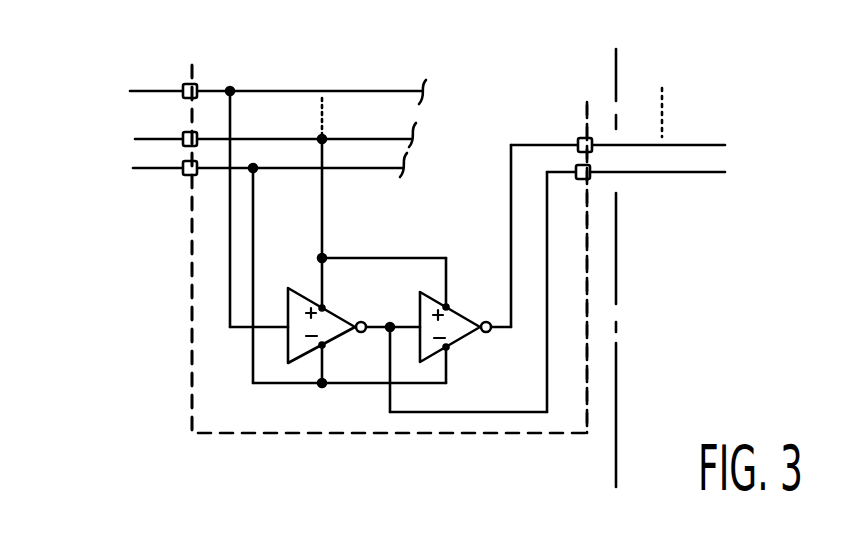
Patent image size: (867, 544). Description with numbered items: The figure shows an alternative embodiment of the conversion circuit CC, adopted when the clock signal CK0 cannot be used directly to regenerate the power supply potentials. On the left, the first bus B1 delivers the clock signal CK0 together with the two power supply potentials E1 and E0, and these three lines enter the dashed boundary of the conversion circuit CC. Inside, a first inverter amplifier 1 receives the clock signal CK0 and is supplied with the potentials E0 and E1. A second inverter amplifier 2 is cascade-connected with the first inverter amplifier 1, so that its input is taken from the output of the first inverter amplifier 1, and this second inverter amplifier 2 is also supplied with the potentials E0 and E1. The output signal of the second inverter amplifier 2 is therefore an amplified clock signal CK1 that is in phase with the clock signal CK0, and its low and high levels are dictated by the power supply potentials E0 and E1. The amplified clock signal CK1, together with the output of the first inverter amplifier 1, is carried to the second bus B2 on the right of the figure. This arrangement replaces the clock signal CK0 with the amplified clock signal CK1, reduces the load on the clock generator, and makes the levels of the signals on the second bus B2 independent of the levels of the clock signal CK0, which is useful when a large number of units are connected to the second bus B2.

The clock signal CK0 is at (160, 88).
The power supply potential E1 is at (148, 139).
The power supply potential E0 is at (150, 168).
The bus B1 is at (153, 194).
The first inverter amplifier 1 is at (299, 289).
The second inverter amplifier 2 is at (415, 311).
The amplified clock signal CK1 is at (708, 145).
The bus B2 is at (700, 220).
The conversion circuit CC is at (296, 426).